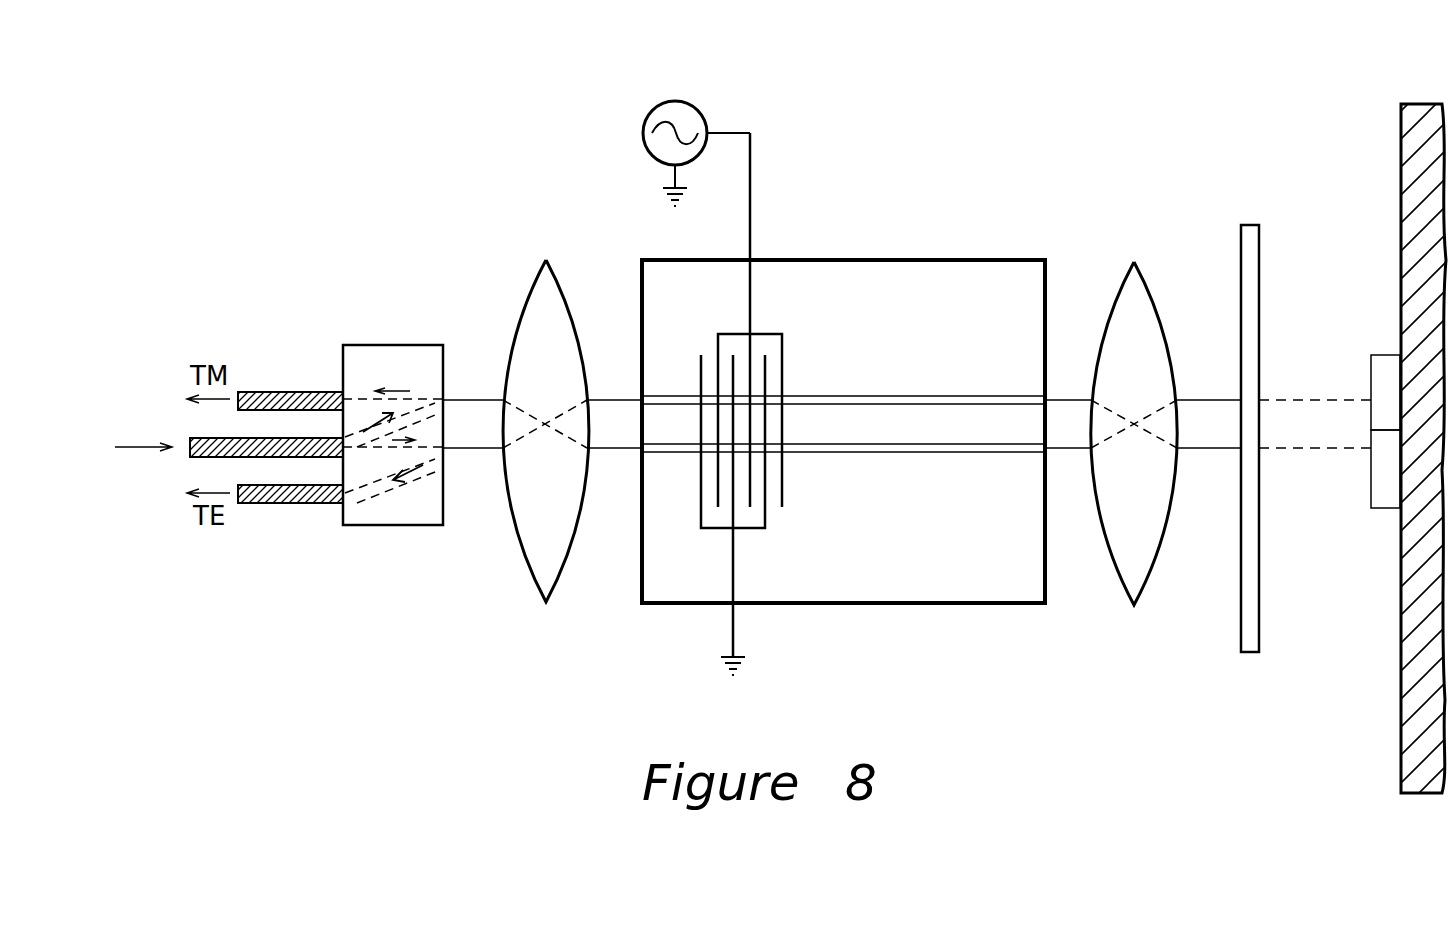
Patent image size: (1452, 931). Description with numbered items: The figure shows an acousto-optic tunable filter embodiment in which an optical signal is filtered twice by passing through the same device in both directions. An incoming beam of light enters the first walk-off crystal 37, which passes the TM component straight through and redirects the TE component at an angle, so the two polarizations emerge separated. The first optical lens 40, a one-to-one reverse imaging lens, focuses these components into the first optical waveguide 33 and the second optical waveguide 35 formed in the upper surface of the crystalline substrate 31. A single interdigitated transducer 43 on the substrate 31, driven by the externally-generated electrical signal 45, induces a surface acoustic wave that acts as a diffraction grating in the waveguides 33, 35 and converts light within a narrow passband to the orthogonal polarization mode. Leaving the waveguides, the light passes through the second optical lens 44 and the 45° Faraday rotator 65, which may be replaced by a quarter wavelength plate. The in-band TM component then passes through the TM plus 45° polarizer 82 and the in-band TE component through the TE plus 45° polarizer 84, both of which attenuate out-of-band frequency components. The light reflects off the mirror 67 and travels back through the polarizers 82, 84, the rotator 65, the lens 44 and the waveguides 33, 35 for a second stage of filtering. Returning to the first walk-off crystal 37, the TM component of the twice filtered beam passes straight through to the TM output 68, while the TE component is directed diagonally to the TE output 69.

The crystalline substrate 31 is at (812, 604).
The first optical waveguide 33 is at (812, 397).
The second optical waveguide 35 is at (816, 455).
The first walk-off crystal 37 is at (367, 357).
The first optical lens 40 is at (540, 297).
The first interdigitated transducer 43 is at (762, 345).
The second optical lens 44 is at (1137, 309).
The externally-generated electrical signal 45 is at (650, 117).
The 45° Faraday rotator 65 is at (1241, 226).
The mirror 67 is at (1384, 120).
The TM output 68 is at (315, 392).
The TE output 69 is at (318, 495).
The TM plus 45° polarizer 82 is at (1387, 366).
The TE plus 45° polarizer 84 is at (1376, 482).